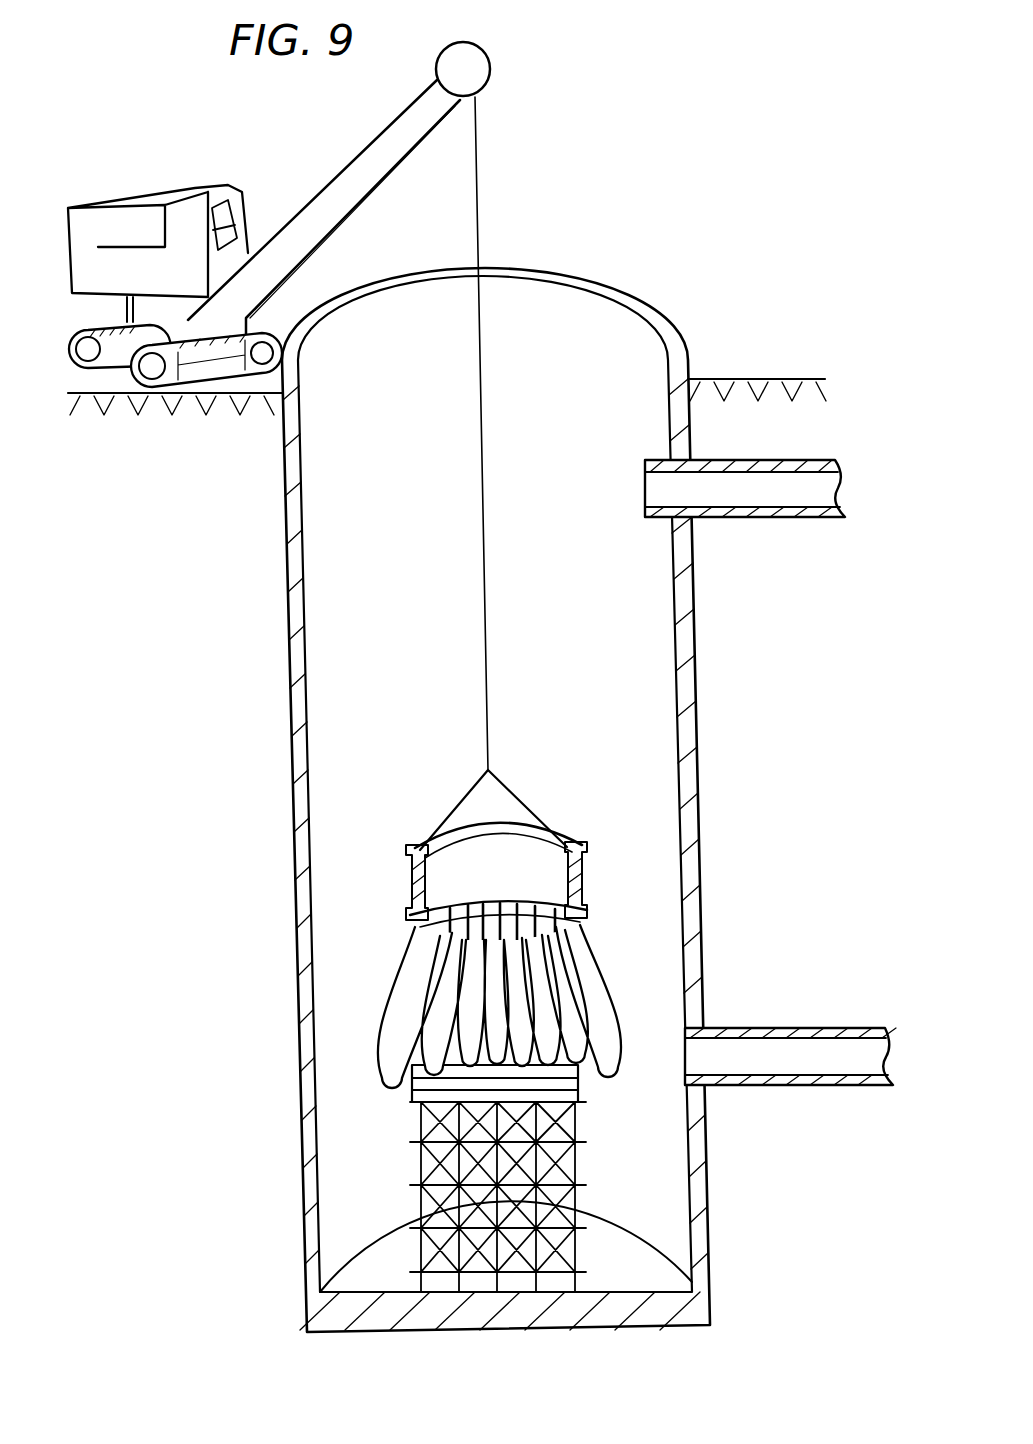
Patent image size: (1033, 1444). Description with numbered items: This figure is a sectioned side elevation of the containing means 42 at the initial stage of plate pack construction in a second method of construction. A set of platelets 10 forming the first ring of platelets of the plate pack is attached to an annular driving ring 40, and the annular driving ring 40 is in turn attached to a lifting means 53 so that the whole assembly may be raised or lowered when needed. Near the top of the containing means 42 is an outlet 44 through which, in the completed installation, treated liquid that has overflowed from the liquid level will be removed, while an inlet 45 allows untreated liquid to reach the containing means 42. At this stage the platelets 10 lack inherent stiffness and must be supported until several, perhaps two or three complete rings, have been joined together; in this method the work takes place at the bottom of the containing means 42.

The lifting means 53 is at (195, 188).
The outlet 44 is at (790, 487).
The containing means 42 is at (653, 777).
The annular driving ring 40 is at (467, 833).
The platelets 10 is at (585, 1027).
The inlet 45 is at (802, 1053).